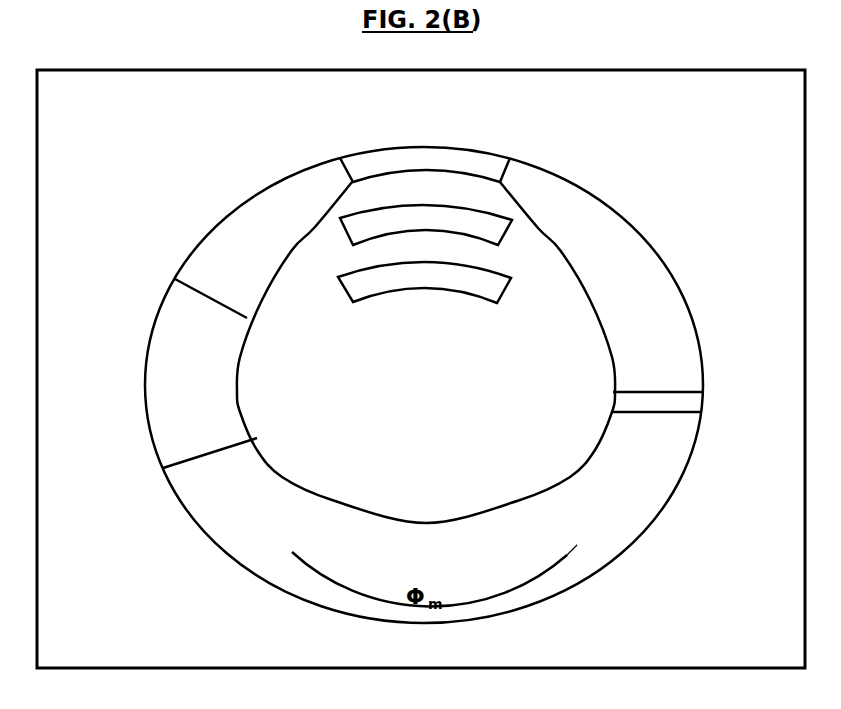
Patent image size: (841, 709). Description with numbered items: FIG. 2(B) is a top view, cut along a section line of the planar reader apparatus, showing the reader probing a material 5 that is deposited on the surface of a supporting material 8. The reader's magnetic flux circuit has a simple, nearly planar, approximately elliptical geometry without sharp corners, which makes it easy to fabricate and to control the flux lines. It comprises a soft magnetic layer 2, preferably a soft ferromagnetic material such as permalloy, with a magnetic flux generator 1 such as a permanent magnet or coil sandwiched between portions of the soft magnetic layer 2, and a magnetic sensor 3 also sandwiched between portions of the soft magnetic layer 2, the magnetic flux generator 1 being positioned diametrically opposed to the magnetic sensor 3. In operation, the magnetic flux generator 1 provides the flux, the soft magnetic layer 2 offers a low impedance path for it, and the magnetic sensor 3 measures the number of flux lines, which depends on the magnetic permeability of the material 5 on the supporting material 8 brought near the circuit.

The magnetic flux generator 1 is at (155, 402).
The soft magnetic layer 2 is at (262, 244).
The magnetic sensor 3 is at (695, 402).
The material 5 is at (470, 159).
The supporting material 8 is at (785, 101).